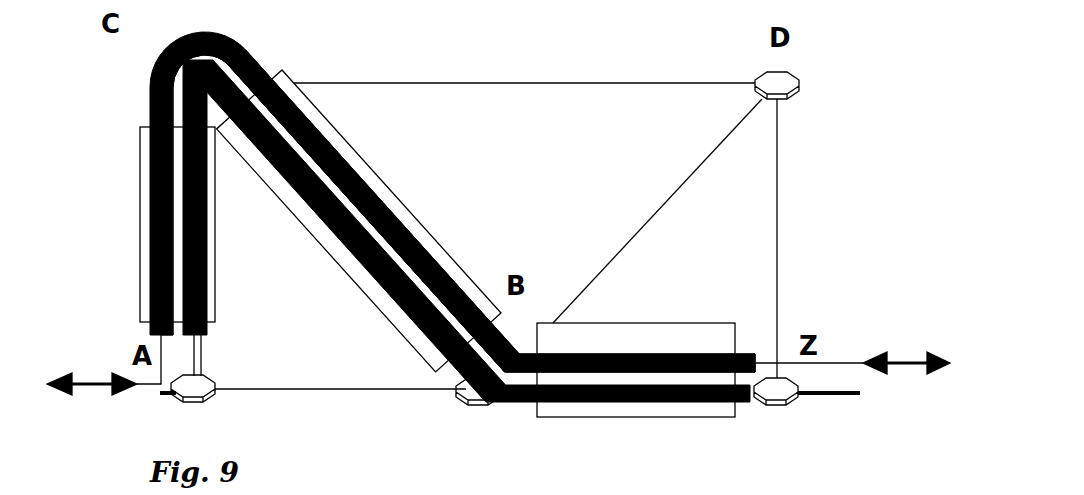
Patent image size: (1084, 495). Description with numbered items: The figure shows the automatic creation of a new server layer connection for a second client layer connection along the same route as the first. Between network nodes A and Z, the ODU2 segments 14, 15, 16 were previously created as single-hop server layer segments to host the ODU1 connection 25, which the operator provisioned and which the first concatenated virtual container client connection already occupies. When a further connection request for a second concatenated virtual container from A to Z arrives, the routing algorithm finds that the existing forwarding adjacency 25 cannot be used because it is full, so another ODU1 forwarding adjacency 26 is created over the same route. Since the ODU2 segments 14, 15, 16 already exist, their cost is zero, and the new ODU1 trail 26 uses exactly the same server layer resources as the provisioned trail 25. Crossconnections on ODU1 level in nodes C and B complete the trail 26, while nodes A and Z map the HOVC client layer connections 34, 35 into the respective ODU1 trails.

The ODU2 segment 14 is at (208, 224).
The ODU2 segment 15 is at (359, 221).
The ODU2 segment 16 is at (636, 353).
The ODU1 connection 25 is at (459, 205).
The ODU1 forwarding adjacency 26 is at (452, 190).
The client layer connection 34 is at (466, 231).
The client layer connection 35 is at (492, 211).